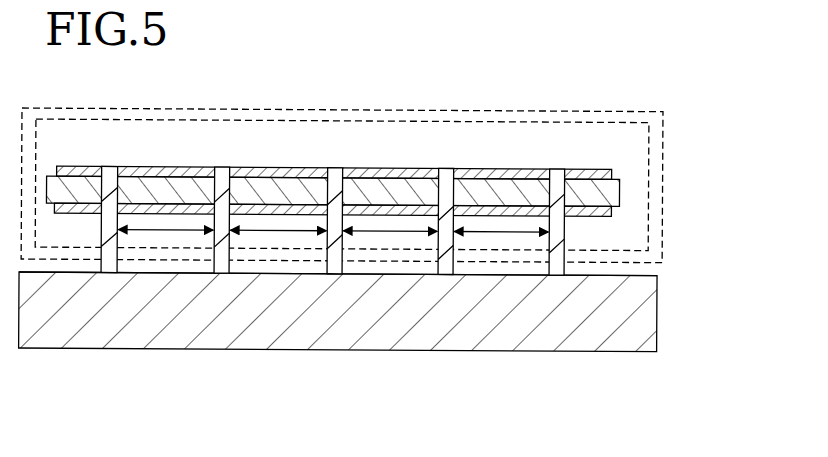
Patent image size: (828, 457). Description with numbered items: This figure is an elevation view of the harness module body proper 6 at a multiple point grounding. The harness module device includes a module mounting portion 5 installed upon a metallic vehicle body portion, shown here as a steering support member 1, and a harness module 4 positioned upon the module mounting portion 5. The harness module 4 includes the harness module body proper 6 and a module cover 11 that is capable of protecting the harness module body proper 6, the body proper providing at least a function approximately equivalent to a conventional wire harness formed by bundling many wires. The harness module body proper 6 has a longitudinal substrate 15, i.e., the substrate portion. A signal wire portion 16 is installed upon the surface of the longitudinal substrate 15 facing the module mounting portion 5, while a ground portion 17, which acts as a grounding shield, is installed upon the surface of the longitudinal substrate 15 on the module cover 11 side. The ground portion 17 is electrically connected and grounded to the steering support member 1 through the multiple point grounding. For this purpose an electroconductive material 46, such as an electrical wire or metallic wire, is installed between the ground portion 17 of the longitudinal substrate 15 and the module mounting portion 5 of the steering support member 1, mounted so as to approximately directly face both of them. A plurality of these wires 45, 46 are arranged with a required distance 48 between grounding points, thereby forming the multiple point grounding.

The steering support member 1 is at (614, 355).
The harness module 4 is at (421, 79).
The module mounting portion 5 is at (650, 272).
The harness module body proper 6 is at (402, 197).
The module cover 11 is at (538, 106).
The longitudinal substrate 15 is at (621, 196).
The signal wire portion 16 is at (383, 236).
The ground portion 17 is at (604, 166).
The bump 45 is at (558, 240).
The electroconductive material 46 is at (338, 291).
The required distance between grounding 48 is at (160, 230).